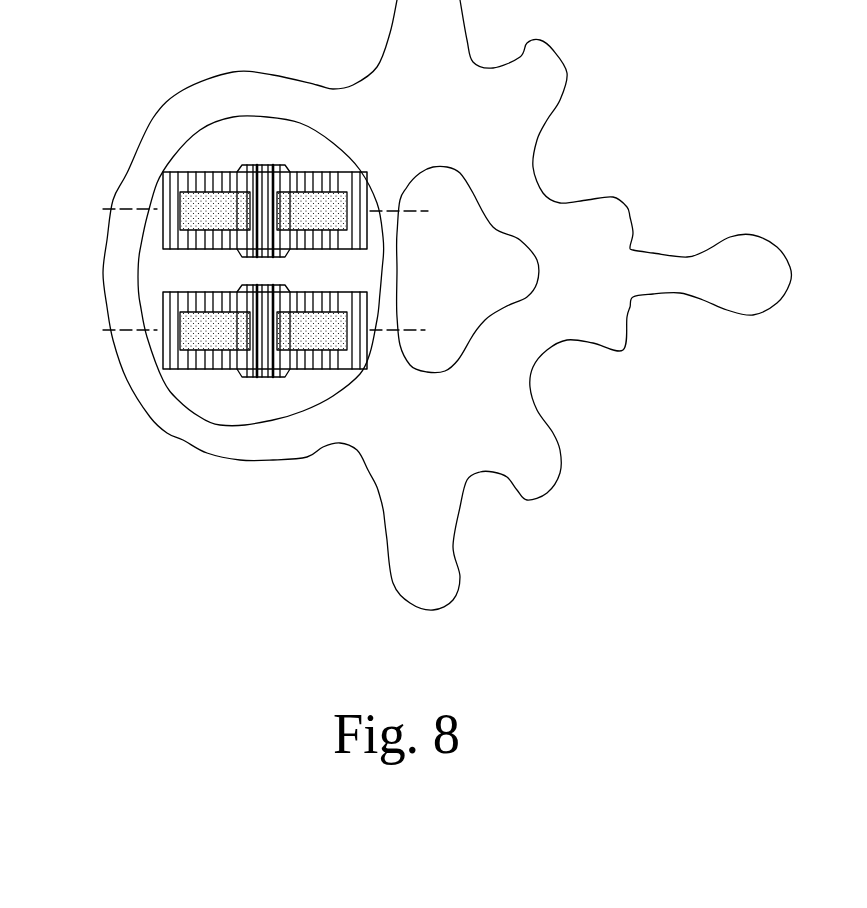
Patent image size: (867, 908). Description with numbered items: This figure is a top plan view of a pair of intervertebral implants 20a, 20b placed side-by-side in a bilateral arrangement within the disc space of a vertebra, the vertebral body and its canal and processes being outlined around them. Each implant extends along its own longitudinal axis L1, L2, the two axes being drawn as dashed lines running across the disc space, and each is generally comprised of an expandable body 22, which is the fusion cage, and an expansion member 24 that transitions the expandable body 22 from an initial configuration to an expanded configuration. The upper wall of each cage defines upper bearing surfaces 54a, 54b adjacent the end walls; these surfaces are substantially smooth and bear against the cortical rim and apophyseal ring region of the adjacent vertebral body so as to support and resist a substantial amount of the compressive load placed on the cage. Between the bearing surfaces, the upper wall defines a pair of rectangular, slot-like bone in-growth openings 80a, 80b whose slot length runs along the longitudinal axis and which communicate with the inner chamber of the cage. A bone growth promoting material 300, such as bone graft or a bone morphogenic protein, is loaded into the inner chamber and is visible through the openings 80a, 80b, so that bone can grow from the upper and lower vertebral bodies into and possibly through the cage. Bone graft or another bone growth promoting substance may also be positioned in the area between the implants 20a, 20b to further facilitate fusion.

The intervertebral implant 20a is at (263, 130).
The intervertebral implant 20b is at (260, 430).
The expandable body 22 is at (160, 266).
The expansion member 24 is at (237, 213).
The bone growth promoting material 300 is at (215, 203).
The upper bearing surface 54a is at (175, 234).
The upper bearing surface 54b is at (350, 186).
The bone in-growth opening 80a is at (217, 240).
The bone in-growth opening 80b is at (330, 317).
The longitudinal axis L1 is at (140, 208).
The longitudinal axis L2 is at (140, 331).